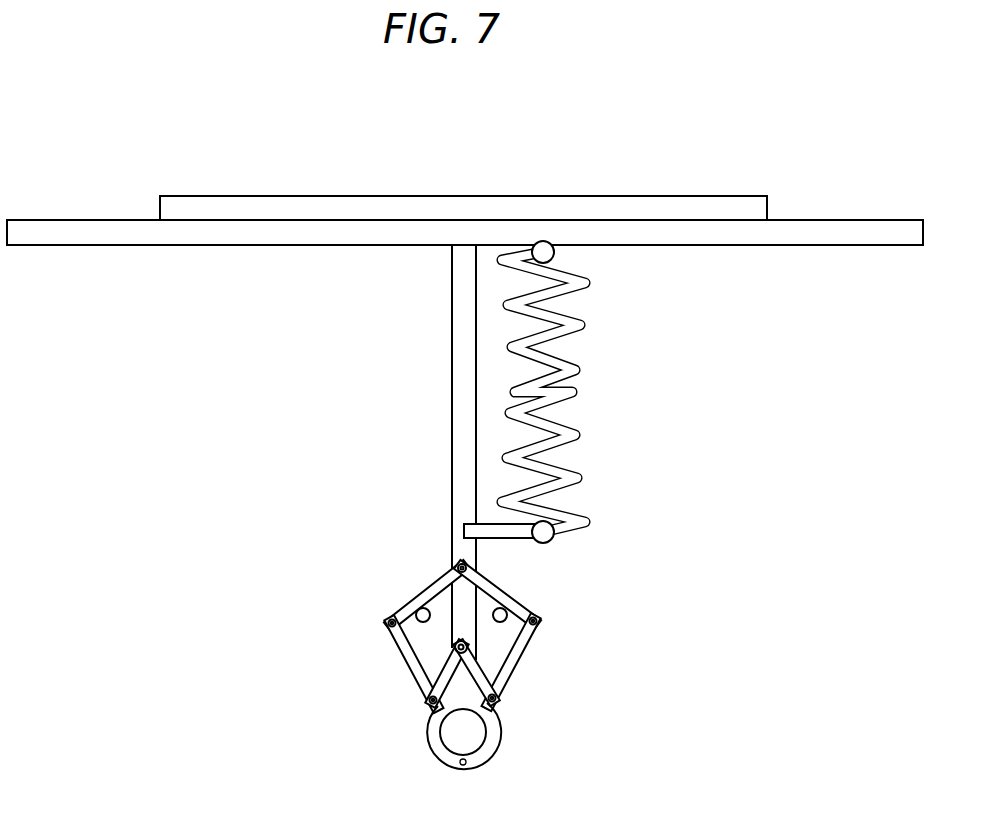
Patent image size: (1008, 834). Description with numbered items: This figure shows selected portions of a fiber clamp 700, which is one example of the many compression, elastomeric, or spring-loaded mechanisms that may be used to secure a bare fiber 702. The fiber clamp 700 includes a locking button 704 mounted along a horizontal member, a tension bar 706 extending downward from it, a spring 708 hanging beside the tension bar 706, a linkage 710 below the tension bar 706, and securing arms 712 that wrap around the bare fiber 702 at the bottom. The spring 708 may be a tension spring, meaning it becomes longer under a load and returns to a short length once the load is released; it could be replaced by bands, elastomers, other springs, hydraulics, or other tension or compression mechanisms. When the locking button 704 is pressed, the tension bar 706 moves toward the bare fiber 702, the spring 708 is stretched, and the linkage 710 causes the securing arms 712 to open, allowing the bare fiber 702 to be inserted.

The fiber clamp 700 is at (166, 492).
The bare fiber 702 is at (465, 735).
The locking button 704 is at (365, 210).
The tension bar 706 is at (452, 371).
The spring 708 is at (585, 333).
The linkage 710 is at (424, 587).
The securing arms 712 is at (500, 740).